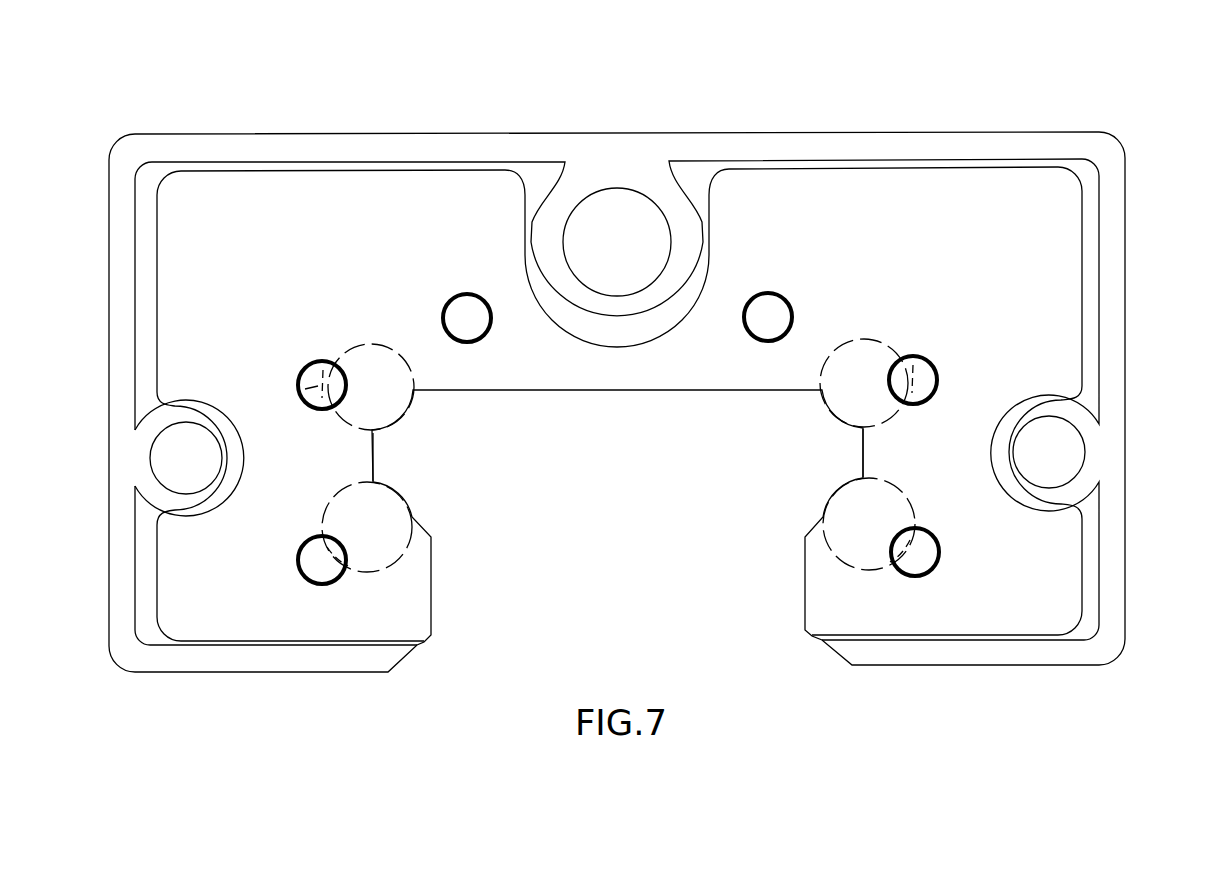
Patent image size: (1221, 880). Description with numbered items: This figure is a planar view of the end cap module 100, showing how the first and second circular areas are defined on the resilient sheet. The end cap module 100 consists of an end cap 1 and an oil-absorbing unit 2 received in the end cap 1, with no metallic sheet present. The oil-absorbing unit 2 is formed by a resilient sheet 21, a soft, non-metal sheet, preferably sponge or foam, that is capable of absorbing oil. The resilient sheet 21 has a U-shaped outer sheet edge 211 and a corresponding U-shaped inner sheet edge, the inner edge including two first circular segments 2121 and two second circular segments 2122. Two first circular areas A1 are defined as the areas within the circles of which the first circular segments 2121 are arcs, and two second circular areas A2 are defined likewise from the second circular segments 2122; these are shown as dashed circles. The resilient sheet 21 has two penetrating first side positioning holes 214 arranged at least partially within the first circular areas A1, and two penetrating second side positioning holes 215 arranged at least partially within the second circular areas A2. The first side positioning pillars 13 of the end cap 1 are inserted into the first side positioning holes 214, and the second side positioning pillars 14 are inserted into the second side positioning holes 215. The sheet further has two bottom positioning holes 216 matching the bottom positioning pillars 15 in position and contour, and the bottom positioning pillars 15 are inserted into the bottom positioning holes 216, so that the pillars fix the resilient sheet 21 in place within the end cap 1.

The end cap module 100 is at (132, 88).
The end cap 1 is at (1120, 134).
The oil-absorbing unit 2 is at (1174, 262).
The resilient sheet 21 is at (1060, 274).
The outer sheet edge 211 is at (155, 224).
The first circular segment 2121 is at (400, 493).
The second circular segment 2122 is at (400, 418).
The first side positioning pillar 13 is at (300, 553).
The second side positioning pillar 14 is at (300, 390).
The bottom positioning pillar 15 is at (456, 318).
The first side positioning hole 214 is at (302, 583).
The second side positioning hole 215 is at (300, 368).
The bottom positioning hole 216 is at (460, 294).
The first circular area A1 is at (380, 573).
The second circular area A2 is at (338, 350).